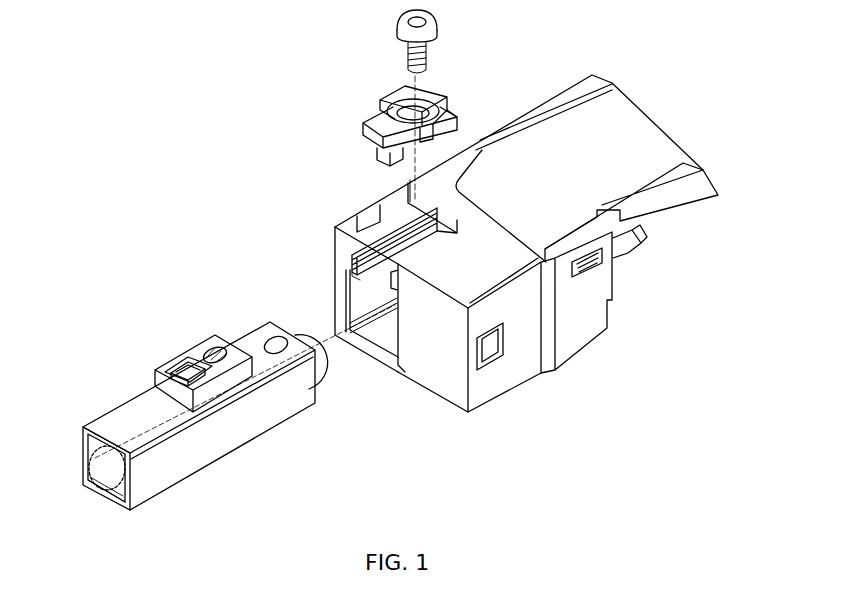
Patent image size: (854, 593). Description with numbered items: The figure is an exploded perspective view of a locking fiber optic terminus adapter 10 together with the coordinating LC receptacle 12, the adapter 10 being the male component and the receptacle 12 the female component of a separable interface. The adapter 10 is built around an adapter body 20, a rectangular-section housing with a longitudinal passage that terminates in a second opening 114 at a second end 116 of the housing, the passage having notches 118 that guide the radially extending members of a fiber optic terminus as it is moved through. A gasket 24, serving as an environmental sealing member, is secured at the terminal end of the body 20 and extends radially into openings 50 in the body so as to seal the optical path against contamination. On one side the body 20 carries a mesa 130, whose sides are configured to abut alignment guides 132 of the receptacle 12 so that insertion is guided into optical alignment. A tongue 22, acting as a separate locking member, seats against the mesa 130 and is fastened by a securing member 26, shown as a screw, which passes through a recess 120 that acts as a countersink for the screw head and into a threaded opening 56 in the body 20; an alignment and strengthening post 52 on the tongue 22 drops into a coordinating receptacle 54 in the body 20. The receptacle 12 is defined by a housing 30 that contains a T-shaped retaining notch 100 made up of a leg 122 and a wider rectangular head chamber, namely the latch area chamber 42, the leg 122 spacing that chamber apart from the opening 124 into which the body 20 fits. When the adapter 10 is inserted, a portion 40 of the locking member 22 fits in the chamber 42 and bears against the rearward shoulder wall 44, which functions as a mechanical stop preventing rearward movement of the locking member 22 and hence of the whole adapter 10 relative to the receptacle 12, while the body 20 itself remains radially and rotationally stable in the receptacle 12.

The fiber optic adapter 10 is at (174, 522).
The LC receptacle 12 is at (452, 420).
The adapter body 20 is at (115, 410).
The tongue 22 is at (365, 127).
The gasket 24 is at (297, 340).
The securing member 26 is at (400, 24).
The housing 30 is at (353, 227).
The portion of the locking member 40 is at (448, 103).
The latch area chamber 42 is at (410, 193).
The rearward shoulder wall 44 is at (405, 212).
The opening 50 is at (270, 338).
The alignment and strengthening post 52 is at (377, 150).
The coordinating receptacle 54 is at (181, 363).
The threaded opening 56 is at (213, 349).
The retaining notch 100 is at (357, 259).
The second opening 114 is at (116, 456).
The second end 116 is at (87, 428).
The notch 118 is at (123, 471).
The recess 120 is at (395, 95).
The leg 122 is at (373, 240).
The opening of the receptacle 124 is at (363, 300).
The mesa 130 is at (207, 397).
The alignment guides 132 is at (350, 267).